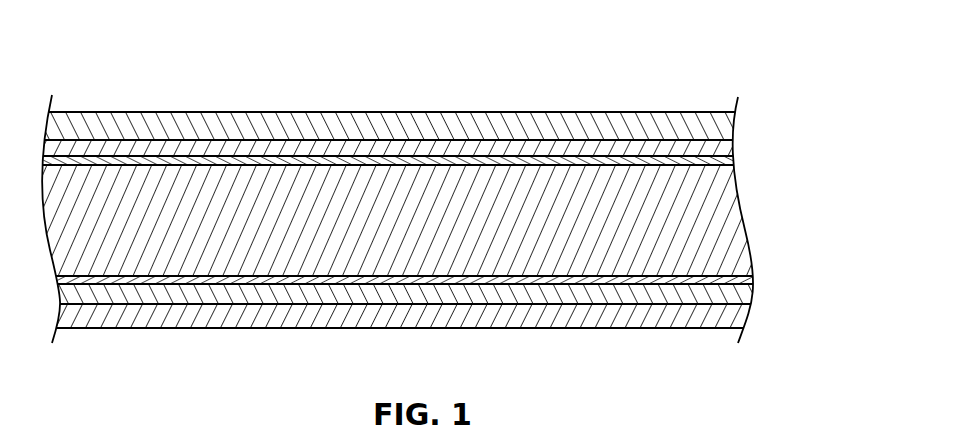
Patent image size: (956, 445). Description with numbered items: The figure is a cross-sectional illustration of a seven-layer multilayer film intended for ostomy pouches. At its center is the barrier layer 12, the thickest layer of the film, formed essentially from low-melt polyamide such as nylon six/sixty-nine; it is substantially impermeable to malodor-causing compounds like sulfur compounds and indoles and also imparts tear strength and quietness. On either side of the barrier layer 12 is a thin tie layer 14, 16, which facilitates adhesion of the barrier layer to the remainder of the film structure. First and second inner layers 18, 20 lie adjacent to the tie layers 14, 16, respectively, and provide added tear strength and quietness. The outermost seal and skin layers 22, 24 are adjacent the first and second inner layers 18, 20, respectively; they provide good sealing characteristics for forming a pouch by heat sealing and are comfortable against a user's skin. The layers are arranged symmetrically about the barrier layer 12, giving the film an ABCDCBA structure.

The seal and skin layer 22 is at (728, 123).
The first inner layer 18 is at (732, 147).
The tie layer 14 is at (730, 162).
The barrier layer 12 is at (727, 193).
The tie layer 16 is at (743, 277).
The second inner layer 20 is at (743, 292).
The seal and skin layer 24 is at (733, 313).